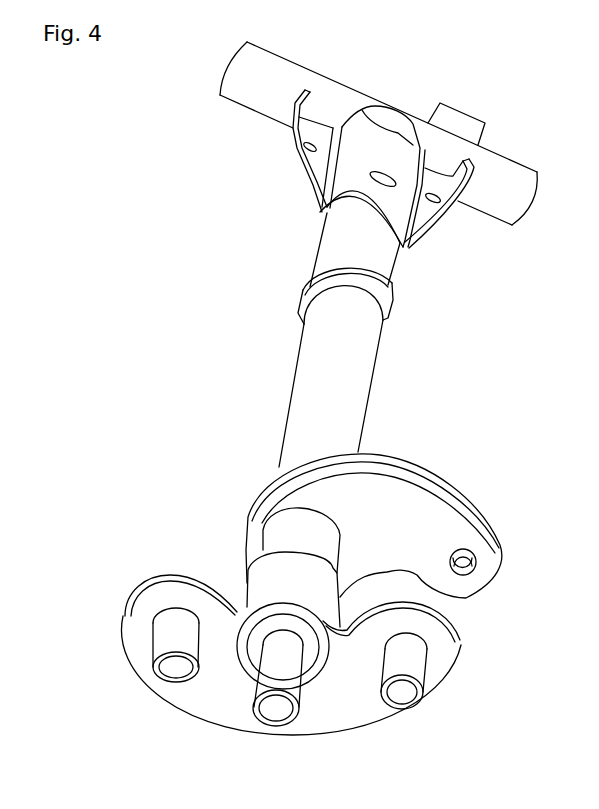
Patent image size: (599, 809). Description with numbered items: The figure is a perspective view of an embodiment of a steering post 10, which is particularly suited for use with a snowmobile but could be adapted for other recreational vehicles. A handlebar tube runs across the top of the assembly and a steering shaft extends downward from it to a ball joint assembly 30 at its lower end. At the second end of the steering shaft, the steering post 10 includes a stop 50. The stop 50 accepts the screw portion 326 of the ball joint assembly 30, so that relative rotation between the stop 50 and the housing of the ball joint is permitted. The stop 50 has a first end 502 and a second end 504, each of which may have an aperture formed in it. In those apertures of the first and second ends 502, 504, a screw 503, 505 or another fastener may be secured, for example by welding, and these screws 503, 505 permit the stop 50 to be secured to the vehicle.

The steering post 10 is at (167, 229).
The ball joint assembly 30 is at (245, 582).
The stop 50 is at (352, 715).
The screw portion 326 is at (267, 678).
The first end 502 is at (150, 598).
The screw 503 is at (163, 640).
The second end 504 is at (443, 640).
The screw 505 is at (412, 667).